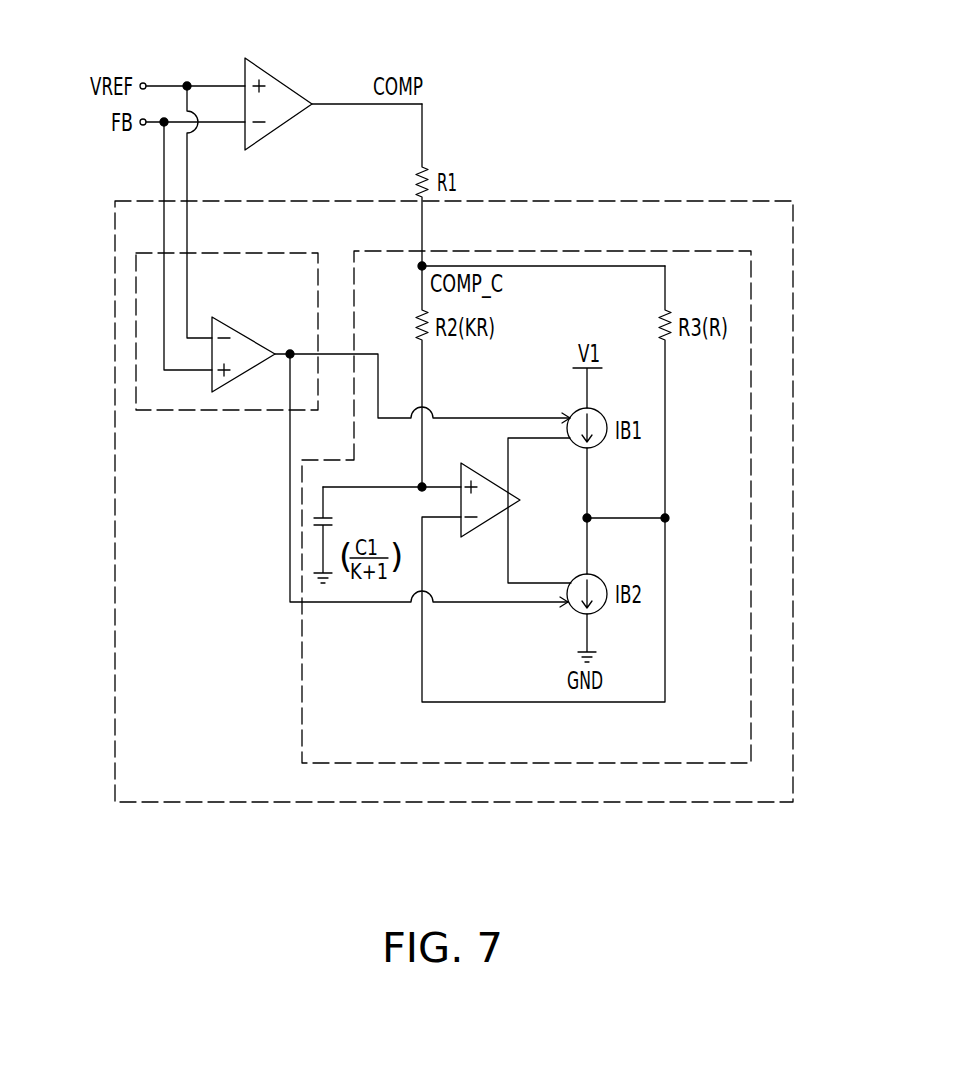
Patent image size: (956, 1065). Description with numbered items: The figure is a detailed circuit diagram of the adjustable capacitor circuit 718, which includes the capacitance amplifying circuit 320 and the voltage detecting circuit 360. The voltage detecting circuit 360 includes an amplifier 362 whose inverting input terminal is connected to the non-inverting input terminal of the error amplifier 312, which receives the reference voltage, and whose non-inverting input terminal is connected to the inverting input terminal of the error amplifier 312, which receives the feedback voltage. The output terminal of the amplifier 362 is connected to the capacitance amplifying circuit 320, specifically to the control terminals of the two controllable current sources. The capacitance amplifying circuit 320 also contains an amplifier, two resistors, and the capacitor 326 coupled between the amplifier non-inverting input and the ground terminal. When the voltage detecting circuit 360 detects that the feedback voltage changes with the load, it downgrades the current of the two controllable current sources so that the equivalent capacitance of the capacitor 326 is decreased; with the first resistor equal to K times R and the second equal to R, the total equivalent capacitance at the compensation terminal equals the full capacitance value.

The error amplifier 312 is at (282, 80).
The adjustable capacitor circuit 718 is at (718, 201).
The voltage detecting circuit 360 is at (262, 252).
The amplifier 362 is at (248, 336).
The capacitance amplifying circuit 320 is at (693, 251).
The capacitor 326 is at (344, 535).